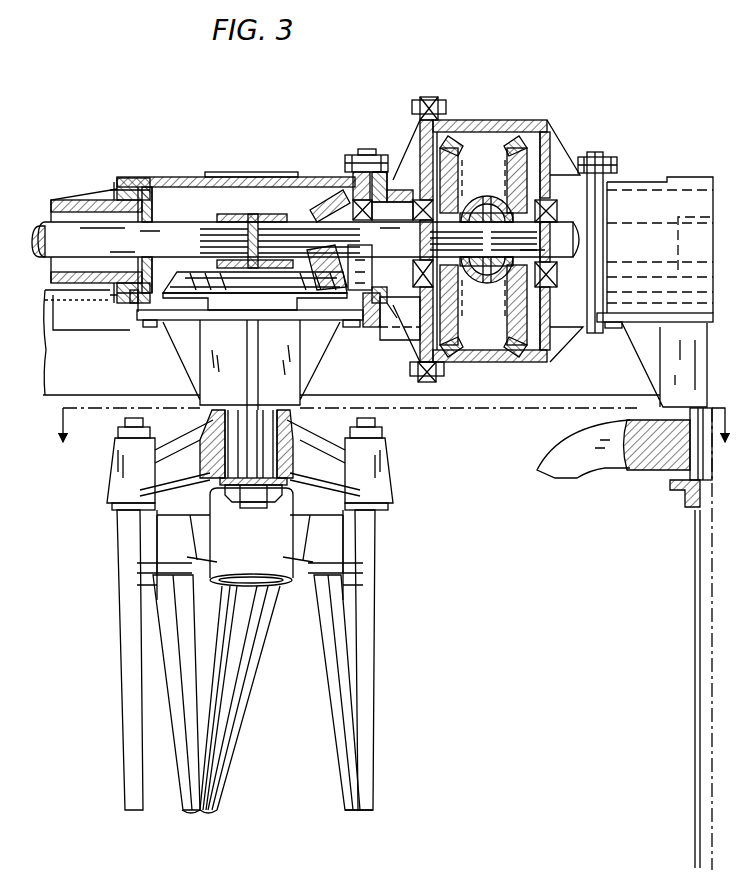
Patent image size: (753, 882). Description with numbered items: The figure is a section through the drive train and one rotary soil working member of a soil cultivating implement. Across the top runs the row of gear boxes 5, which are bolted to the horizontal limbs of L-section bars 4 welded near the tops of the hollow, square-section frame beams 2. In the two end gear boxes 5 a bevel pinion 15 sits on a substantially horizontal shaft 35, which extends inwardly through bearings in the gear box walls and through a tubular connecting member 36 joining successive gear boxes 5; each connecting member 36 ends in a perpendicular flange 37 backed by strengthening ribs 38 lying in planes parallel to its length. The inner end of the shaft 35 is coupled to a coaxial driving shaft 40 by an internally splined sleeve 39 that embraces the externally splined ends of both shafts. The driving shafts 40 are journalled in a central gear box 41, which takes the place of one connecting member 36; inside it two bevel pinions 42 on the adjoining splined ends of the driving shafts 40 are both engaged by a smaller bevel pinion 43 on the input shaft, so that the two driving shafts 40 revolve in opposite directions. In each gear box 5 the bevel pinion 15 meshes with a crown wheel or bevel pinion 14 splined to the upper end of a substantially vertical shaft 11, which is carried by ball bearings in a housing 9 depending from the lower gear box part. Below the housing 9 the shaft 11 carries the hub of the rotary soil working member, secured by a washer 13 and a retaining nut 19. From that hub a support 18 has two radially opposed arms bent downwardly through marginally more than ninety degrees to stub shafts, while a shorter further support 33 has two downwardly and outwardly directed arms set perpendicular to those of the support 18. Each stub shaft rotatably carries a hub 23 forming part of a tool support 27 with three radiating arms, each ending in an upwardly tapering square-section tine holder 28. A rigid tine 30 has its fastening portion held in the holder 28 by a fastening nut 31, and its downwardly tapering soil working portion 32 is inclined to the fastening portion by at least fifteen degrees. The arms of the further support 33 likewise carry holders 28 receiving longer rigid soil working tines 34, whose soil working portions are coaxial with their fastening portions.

The frame beam 2 is at (384, 639).
The bar of L-shaped cross-section 4 is at (68, 322).
The gear box 5 is at (280, 177).
The housing 9 is at (200, 368).
The shaft 11 is at (255, 407).
The washer 13 is at (266, 495).
The crown wheel or bevel pinion 14 is at (188, 262).
The bevel pinion 15 is at (318, 210).
The support 18 is at (603, 478).
The retaining nut 19 is at (243, 508).
The hub 23 is at (283, 575).
The tool support 27 is at (201, 562).
The tine holder 28 is at (150, 540).
The rigid tine 30 is at (250, 709).
The fastening nut 31 is at (197, 477).
The soil working portion 32 is at (343, 755).
The further support 33 is at (190, 440).
The rigid soil working tine 34 is at (122, 661).
The shaft 35 is at (44, 229).
The tubular connecting member 36 is at (100, 200).
The flange 37 is at (132, 178).
The strengthening rib 38 is at (114, 185).
The internally splined sleeve 39 is at (252, 214).
The driving shaft 40 is at (400, 318).
The central gear box 41 is at (535, 120).
The bevel pinion 42 is at (507, 153).
The smaller bevel pinion 43 is at (494, 205).